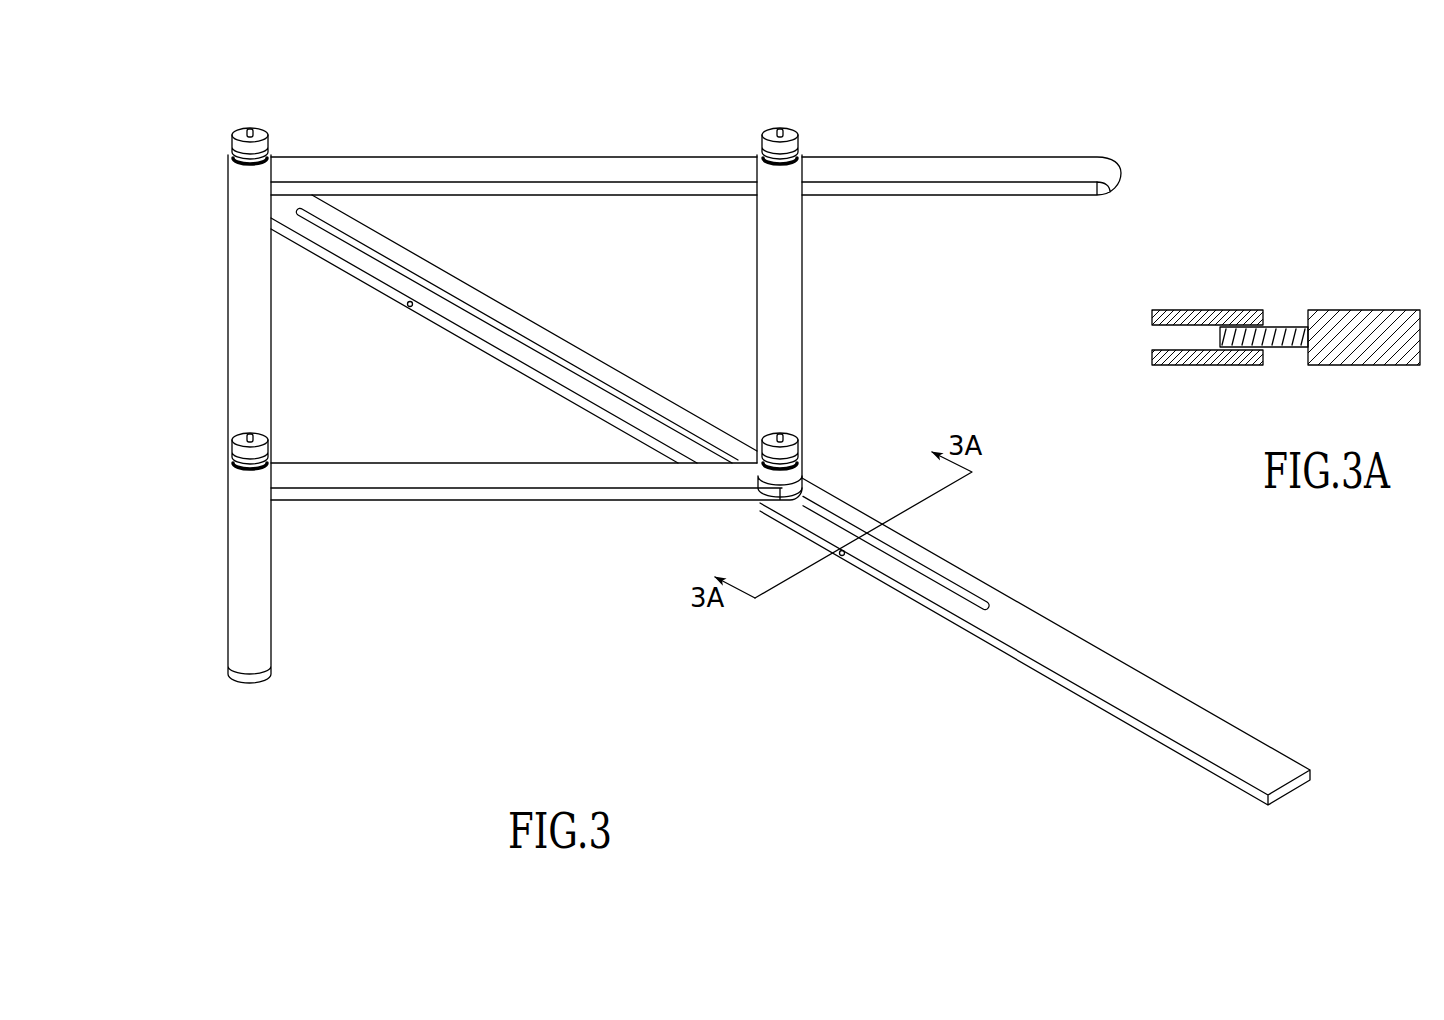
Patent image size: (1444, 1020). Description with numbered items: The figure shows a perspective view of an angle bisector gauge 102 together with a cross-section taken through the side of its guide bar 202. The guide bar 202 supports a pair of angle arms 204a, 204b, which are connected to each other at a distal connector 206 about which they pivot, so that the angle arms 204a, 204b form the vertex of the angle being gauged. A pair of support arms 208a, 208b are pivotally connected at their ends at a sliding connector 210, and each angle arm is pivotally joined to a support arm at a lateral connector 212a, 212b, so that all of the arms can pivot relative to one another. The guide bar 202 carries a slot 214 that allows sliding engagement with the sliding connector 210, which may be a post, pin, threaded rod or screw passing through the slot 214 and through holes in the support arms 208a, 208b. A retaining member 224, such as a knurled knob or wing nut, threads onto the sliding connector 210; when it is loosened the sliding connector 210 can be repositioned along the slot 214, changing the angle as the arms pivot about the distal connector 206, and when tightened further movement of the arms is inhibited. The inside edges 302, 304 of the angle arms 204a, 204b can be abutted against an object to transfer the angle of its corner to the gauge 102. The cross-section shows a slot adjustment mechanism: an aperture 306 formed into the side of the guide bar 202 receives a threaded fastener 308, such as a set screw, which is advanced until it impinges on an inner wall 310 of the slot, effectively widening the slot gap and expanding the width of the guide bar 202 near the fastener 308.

In FIG. 3, the angle bisector gauge 102 is at (922, 110).
In FIG. 3, the guide bar 202 is at (1103, 662).
In FIG. 3, the angle arm 204a is at (248, 330).
In FIG. 3, the angle arm 204b is at (483, 170).
In FIG. 3, the distal connector 206 is at (240, 133).
In FIG. 3, the support arm 208a is at (497, 478).
In FIG. 3, the support arm 208b is at (785, 296).
In FIG. 3, the sliding connector 210 is at (762, 470).
In FIG. 3, the lateral connector 212a is at (240, 442).
In FIG. 3, the lateral connector 212b is at (772, 128).
In FIG. 3, the slot 214 is at (922, 565).
In FIG. 3, the retaining member 224 is at (790, 438).
In FIG. 3, the inside edge 302 is at (278, 345).
In FIG. 3, the inside edge 304 is at (632, 185).
In FIG. 3, the aperture 306 is at (407, 305).
In FIG. 3A, the aperture 306 is at (1168, 336).
In FIG. 3A, the threaded fastener 308 is at (1278, 322).
In FIG. 3A, the inner wall 310 is at (1305, 360).